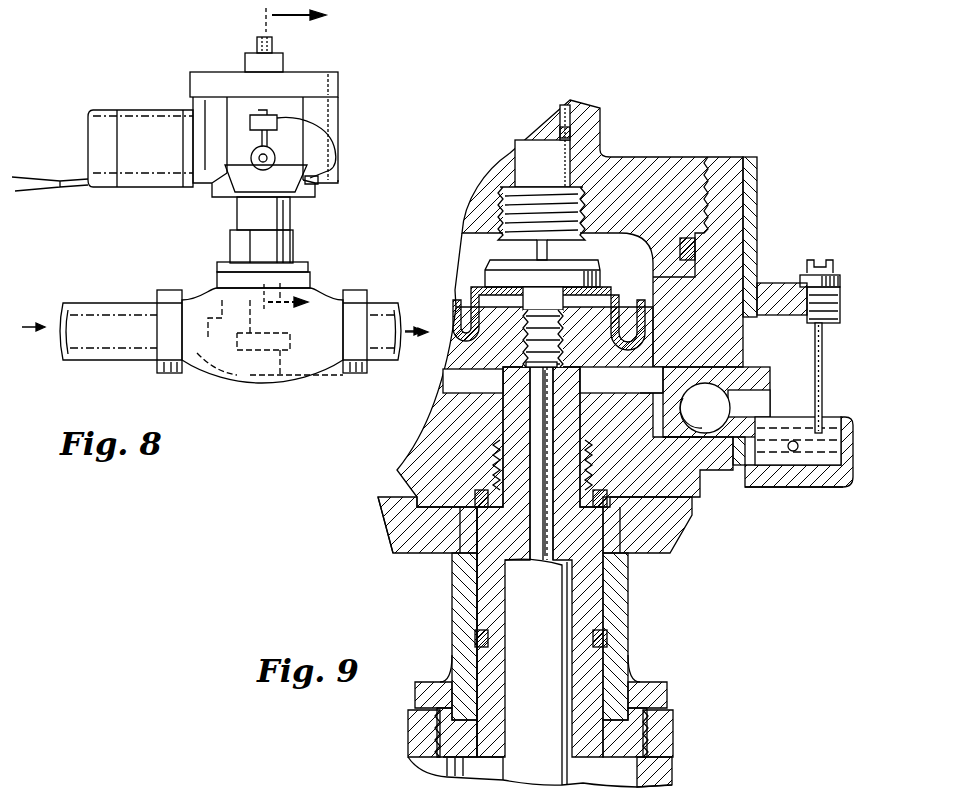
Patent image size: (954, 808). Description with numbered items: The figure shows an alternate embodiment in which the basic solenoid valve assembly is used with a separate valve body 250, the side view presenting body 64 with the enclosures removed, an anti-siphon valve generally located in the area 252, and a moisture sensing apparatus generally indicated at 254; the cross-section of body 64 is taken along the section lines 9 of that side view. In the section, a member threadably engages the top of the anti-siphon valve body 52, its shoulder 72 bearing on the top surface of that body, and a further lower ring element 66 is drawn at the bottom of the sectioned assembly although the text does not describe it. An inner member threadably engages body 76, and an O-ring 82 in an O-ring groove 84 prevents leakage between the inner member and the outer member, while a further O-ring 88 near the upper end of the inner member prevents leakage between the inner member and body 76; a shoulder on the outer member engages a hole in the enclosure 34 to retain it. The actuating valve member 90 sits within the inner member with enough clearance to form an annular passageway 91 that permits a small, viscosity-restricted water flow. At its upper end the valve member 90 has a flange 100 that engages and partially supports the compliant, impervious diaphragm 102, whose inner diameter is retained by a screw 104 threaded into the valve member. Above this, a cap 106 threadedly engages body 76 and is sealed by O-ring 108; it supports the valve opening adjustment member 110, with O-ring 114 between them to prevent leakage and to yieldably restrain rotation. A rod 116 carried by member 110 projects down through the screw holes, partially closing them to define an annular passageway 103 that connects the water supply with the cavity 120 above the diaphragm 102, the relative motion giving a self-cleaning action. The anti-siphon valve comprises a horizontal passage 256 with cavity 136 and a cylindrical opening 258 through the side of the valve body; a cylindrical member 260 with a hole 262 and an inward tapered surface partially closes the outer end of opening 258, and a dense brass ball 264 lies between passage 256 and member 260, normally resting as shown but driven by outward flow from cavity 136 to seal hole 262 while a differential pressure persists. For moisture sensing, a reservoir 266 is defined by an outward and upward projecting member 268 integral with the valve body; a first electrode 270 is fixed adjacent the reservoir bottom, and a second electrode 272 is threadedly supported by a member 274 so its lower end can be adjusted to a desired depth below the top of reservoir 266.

In FIG. 8, the section lines 9— 9 is at (284, 160).
In FIG. 8, the body 64 is at (350, 100).
In FIG. 8, the anti-siphon valve 252 is at (272, 157).
In FIG. 8, the moisture sensing apparatus 254 is at (314, 180).
In FIG. 8, the valve body 250 is at (303, 374).
In FIG. 9, the O-ring 114 is at (572, 131).
In FIG. 9, the valve opening adjustment member 110 is at (558, 160).
In FIG. 9, the cap 106 is at (675, 158).
In FIG. 9, the body 76 is at (723, 157).
In FIG. 9, the member 274 is at (787, 283).
In FIG. 9, the cavity above diaphragm 120 is at (468, 244).
In FIG. 9, the screw 104 is at (582, 262).
In FIG. 9, the diaphragm 102 is at (607, 286).
In FIG. 9, the O-ring 108 is at (695, 252).
In FIG. 9, the flange 100 is at (563, 355).
In FIG. 9, the cavity 136 is at (438, 382).
In FIG. 9, the ball 264 is at (688, 397).
In FIG. 9, the cylindrical member 260 is at (757, 372).
In FIG. 9, the second electrode 272 is at (823, 378).
In FIG. 9, the first electrode 270 is at (795, 440).
In FIG. 9, the passage 256 is at (642, 406).
In FIG. 9, the cylindrical opening 258 is at (690, 440).
In FIG. 9, the hole 262 is at (747, 407).
In FIG. 9, the reservoir 266 is at (828, 462).
In FIG. 9, the outward and upward projecting member 268 is at (797, 480).
In FIG. 9, the O-ring 88 is at (467, 508).
In FIG. 9, the enclosure 34 is at (405, 532).
In FIG. 9, the rod 116 is at (545, 532).
In FIG. 9, the annular passageway 103 is at (530, 541).
In FIG. 9, the annular passageway 91 is at (500, 583).
In FIG. 9, the valve member 90 is at (567, 590).
In FIG. 9, the O-ring groove 84 is at (600, 617).
In FIG. 9, the O-ring 82 is at (603, 637).
In FIG. 9, the shoulder 72 is at (657, 692).
In FIG. 9, the anti-siphon valve body 52 is at (667, 735).
In FIG. 9, the ring 66 is at (623, 773).